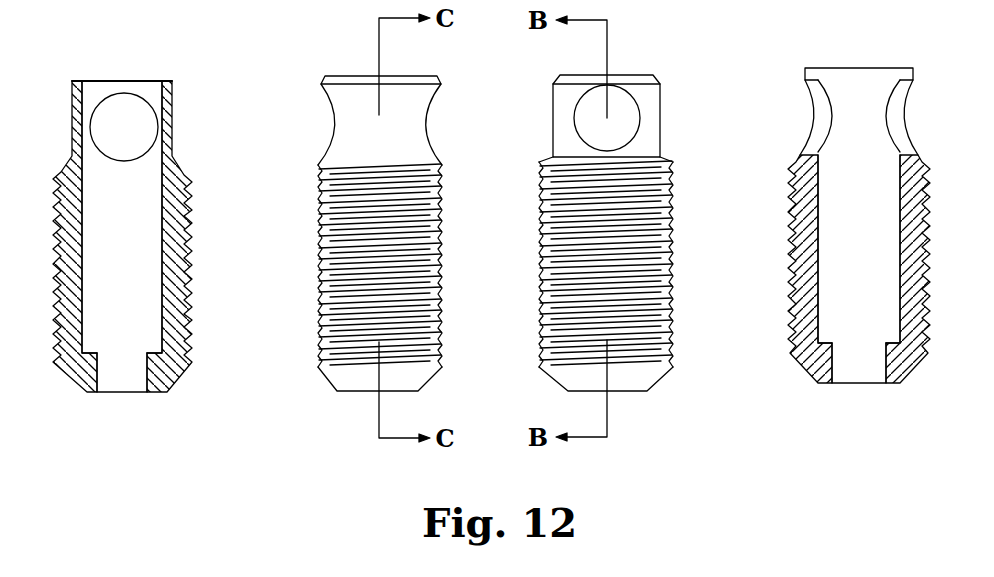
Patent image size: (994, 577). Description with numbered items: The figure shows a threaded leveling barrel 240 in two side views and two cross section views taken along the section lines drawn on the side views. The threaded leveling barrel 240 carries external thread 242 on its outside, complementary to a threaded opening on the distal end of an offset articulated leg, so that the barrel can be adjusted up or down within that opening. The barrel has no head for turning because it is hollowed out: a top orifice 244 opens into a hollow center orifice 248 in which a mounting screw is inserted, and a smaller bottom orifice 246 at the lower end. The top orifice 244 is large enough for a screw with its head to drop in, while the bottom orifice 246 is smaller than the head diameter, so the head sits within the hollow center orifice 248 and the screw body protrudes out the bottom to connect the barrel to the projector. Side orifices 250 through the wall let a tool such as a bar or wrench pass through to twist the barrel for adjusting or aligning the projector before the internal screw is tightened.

The threaded leveling barrel 240 is at (412, 77).
The external threads 242 is at (313, 291).
The top orifice 244 is at (855, 73).
The bottom orifice 246 is at (118, 383).
The hollow center orifice 248 is at (101, 205).
The side orifices 250 is at (131, 107).